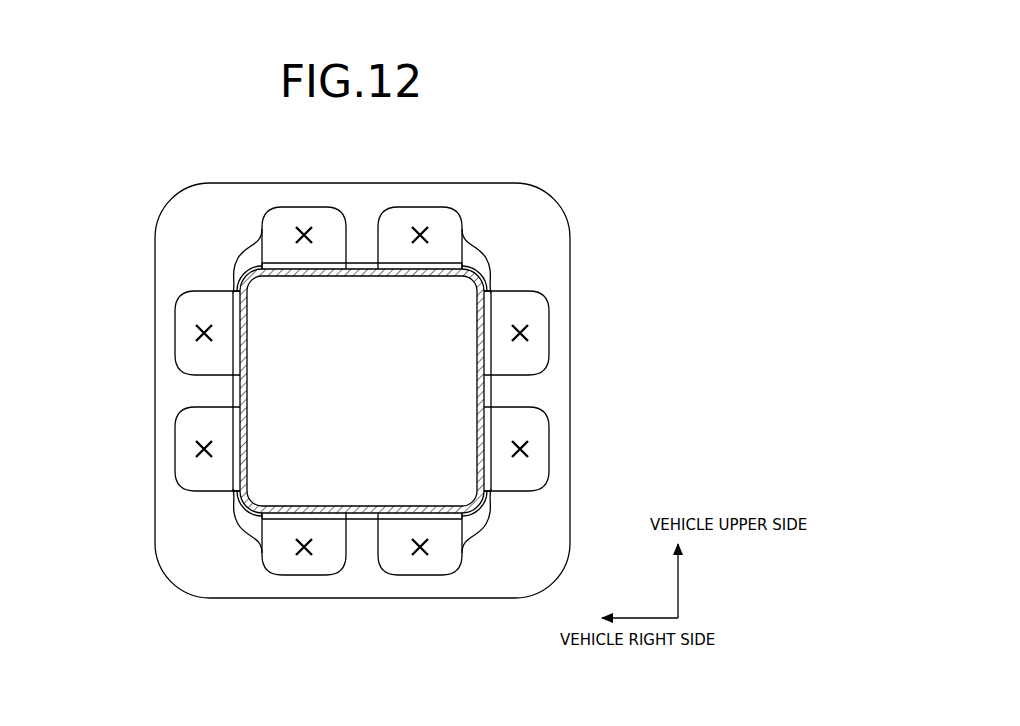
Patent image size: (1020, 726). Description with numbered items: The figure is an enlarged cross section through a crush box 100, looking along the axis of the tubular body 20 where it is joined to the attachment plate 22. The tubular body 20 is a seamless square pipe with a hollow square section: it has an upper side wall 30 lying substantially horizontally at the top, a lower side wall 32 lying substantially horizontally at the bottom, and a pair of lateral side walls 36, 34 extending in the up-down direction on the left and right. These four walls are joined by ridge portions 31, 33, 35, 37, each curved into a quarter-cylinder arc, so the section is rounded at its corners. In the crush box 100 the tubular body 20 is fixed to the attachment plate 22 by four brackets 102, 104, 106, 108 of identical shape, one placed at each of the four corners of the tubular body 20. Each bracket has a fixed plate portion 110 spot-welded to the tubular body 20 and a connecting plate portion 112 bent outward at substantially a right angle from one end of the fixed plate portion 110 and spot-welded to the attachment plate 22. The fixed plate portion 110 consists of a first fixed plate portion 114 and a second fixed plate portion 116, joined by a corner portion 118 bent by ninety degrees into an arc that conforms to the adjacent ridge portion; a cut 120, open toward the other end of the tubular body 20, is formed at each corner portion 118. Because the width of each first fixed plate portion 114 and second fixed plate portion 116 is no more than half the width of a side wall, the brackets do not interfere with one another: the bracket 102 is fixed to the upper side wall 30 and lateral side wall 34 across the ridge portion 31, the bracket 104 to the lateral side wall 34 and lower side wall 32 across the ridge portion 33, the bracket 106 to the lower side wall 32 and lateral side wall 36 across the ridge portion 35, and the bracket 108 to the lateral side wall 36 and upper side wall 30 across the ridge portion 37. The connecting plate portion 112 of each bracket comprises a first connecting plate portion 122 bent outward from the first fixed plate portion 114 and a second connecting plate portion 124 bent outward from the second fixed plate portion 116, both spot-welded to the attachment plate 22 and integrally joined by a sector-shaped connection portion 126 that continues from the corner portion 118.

The tubular body 20 is at (231, 393).
The attachment plate 22 is at (545, 225).
The upper side wall 30 is at (347, 277).
The ridge portion 31 is at (472, 286).
The lower side wall 32 is at (356, 506).
The ridge portion 33 is at (472, 498).
The lateral side wall 34 is at (474, 386).
The ridge portion 35 is at (252, 498).
The lateral side wall 36 is at (248, 390).
The ridge portion 37 is at (252, 286).
The crush box 100 is at (632, 180).
The bracket 102 is at (519, 235).
The bracket 104 is at (506, 546).
The bracket 106 is at (196, 534).
The bracket 108 is at (207, 236).
The fixed plate portion 110 is at (392, 255).
The connecting plate portion 112 is at (319, 198).
The first fixed plate portion 114 is at (437, 268).
The second fixed plate portion 116 is at (264, 258).
The corner portion 118 is at (238, 266).
The cut 120 is at (231, 266).
The first connecting plate portion 122 is at (406, 222).
The second connecting plate portion 124 is at (303, 218).
The connection portion 126 is at (233, 265).